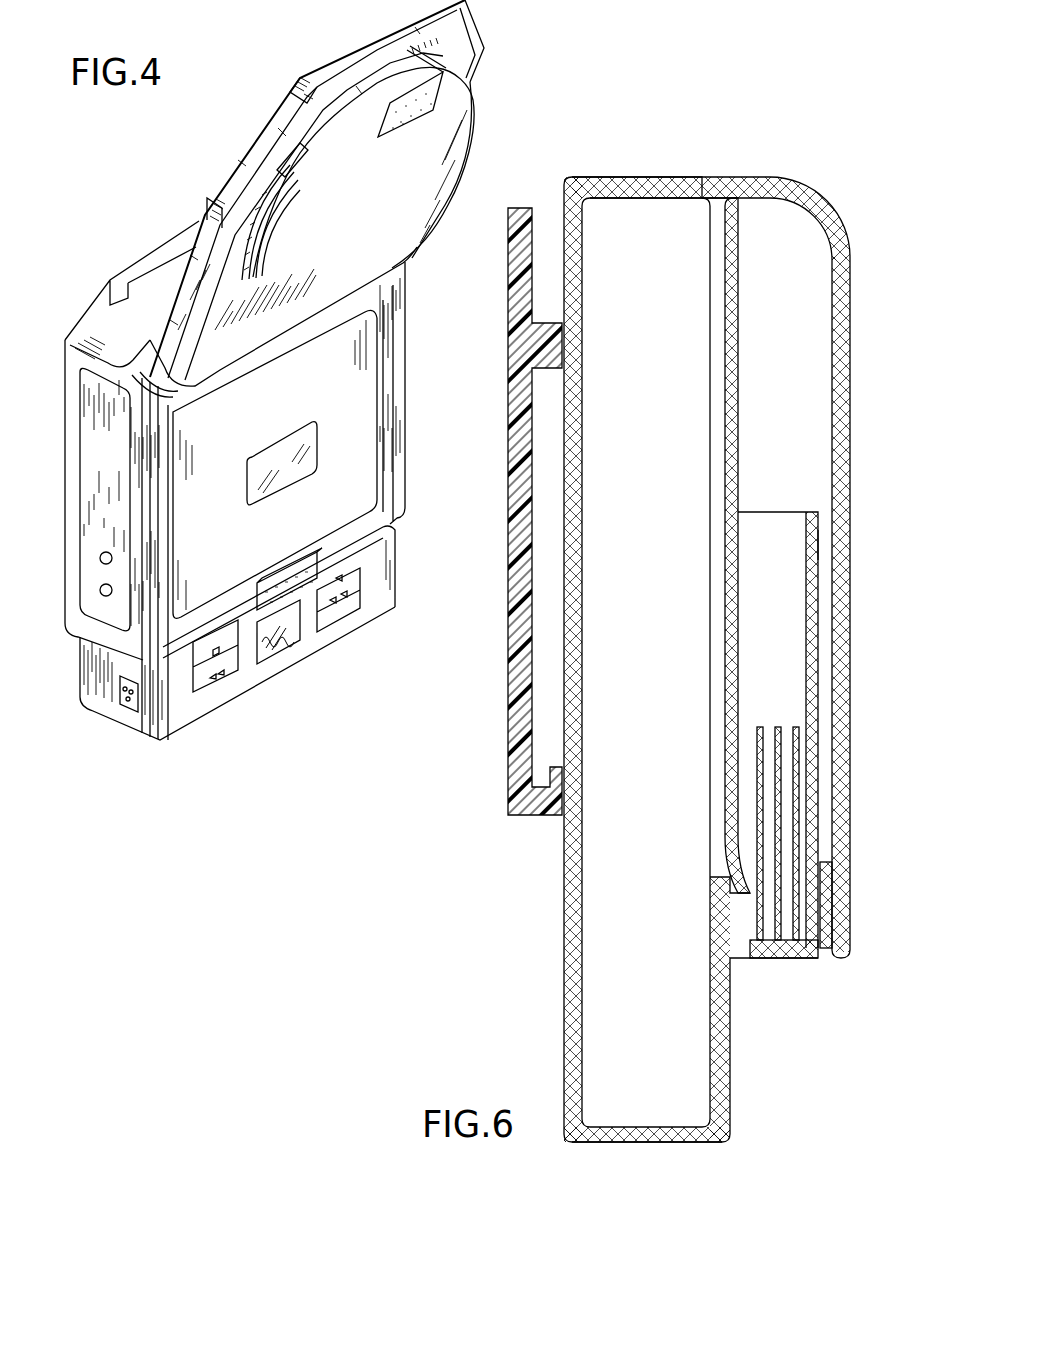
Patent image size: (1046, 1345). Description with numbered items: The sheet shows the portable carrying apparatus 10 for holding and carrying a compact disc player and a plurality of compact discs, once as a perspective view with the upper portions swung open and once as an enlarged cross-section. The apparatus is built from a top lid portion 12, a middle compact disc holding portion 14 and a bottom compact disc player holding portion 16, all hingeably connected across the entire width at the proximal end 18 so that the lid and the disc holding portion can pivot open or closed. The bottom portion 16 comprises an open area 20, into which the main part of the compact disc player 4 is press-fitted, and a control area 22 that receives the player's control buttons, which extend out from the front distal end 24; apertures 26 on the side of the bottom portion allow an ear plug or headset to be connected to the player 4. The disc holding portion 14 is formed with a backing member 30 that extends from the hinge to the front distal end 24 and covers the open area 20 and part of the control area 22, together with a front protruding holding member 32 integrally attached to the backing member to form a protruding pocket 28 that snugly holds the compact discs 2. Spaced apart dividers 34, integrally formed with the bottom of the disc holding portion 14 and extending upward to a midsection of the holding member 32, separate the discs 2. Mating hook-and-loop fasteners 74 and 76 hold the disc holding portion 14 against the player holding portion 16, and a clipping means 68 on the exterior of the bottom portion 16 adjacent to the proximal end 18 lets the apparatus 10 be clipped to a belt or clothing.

In FIG. 4, the compact disc 2 is at (267, 200).
In FIG. 4, the compact disc player 4 is at (357, 367).
In FIG. 6, the portable carrying apparatus 10 is at (755, 88).
In FIG. 6, the top lid portion 12 is at (852, 380).
In FIG. 4, the middle compact disc holding portion 14 is at (442, 225).
In FIG. 6, the bottom compact disc player holding portion 16 is at (580, 858).
In FIG. 6, the proximal end 18 is at (668, 177).
In FIG. 4, the open area 20 is at (377, 457).
In FIG. 6, the open area 20 is at (662, 491).
In FIG. 4, the control area 22 is at (170, 692).
In FIG. 6, the control area 22 is at (662, 1103).
In FIG. 6, the front distal end 24 is at (687, 1142).
In FIG. 4, the apertures 26 is at (100, 592).
In FIG. 6, the protruding pocket 28 is at (777, 532).
In FIG. 4, the backing member 30 is at (445, 138).
In FIG. 6, the backing member 30 is at (740, 352).
In FIG. 4, the front protruding holding member 32 is at (397, 67).
In FIG. 6, the front protruding holding member 32 is at (818, 553).
In FIG. 6, the dividers 34 is at (780, 728).
In FIG. 6, the clipping means 68 is at (509, 800).
In FIG. 4, the VELCRO fastener 74 is at (423, 98).
In FIG. 4, the VELCRO fastener 76 is at (307, 580).